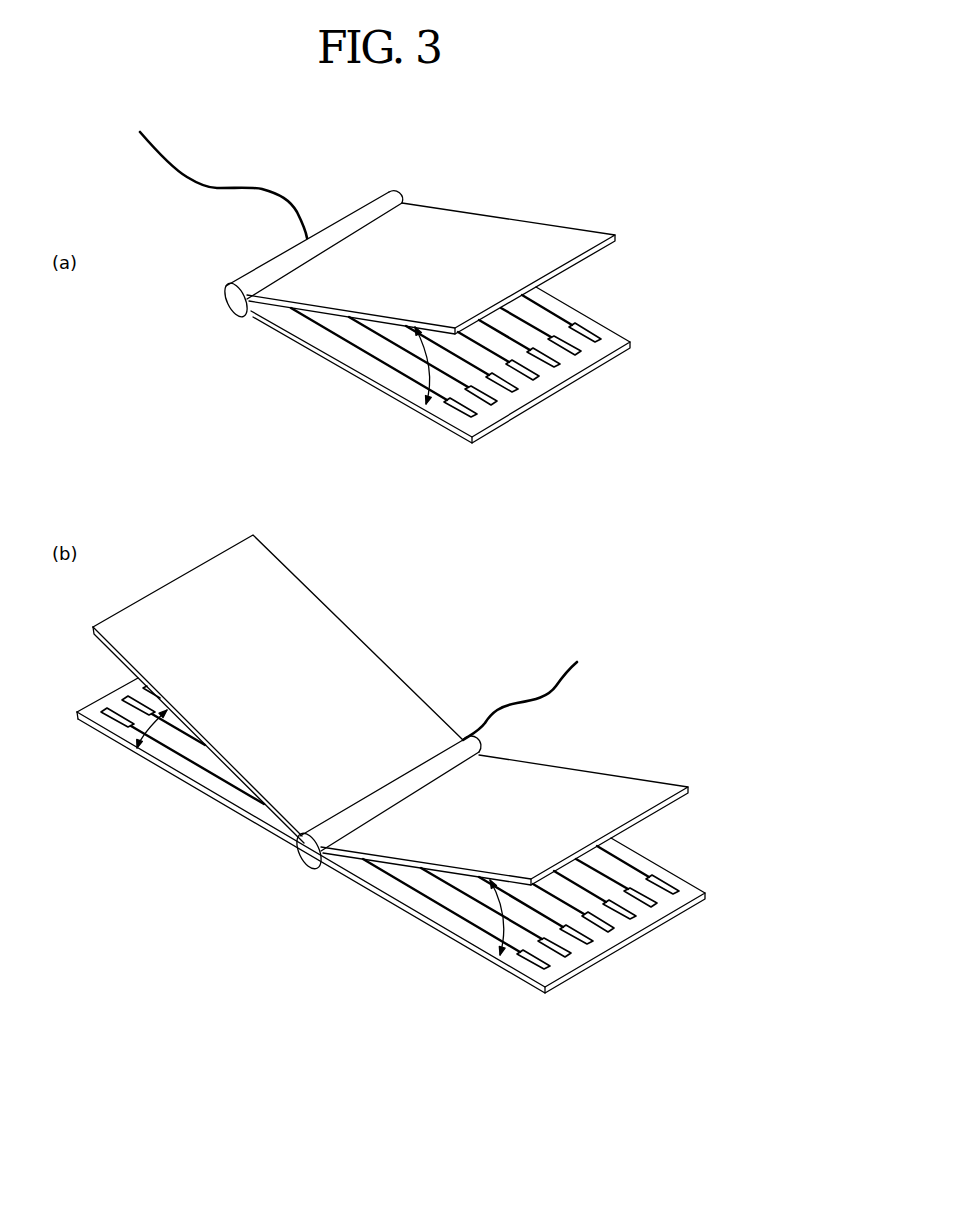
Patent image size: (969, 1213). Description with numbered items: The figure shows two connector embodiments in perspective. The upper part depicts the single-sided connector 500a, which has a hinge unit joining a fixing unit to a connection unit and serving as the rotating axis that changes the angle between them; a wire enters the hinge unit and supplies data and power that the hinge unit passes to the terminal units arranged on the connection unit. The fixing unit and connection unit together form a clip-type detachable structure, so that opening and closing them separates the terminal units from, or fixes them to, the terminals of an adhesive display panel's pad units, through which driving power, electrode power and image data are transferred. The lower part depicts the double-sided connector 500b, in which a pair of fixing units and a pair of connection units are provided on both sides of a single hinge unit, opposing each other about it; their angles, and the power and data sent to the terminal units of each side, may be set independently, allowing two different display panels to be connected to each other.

The single-sided connector 500a is at (592, 210).
The double-sided connector 500b is at (609, 754).